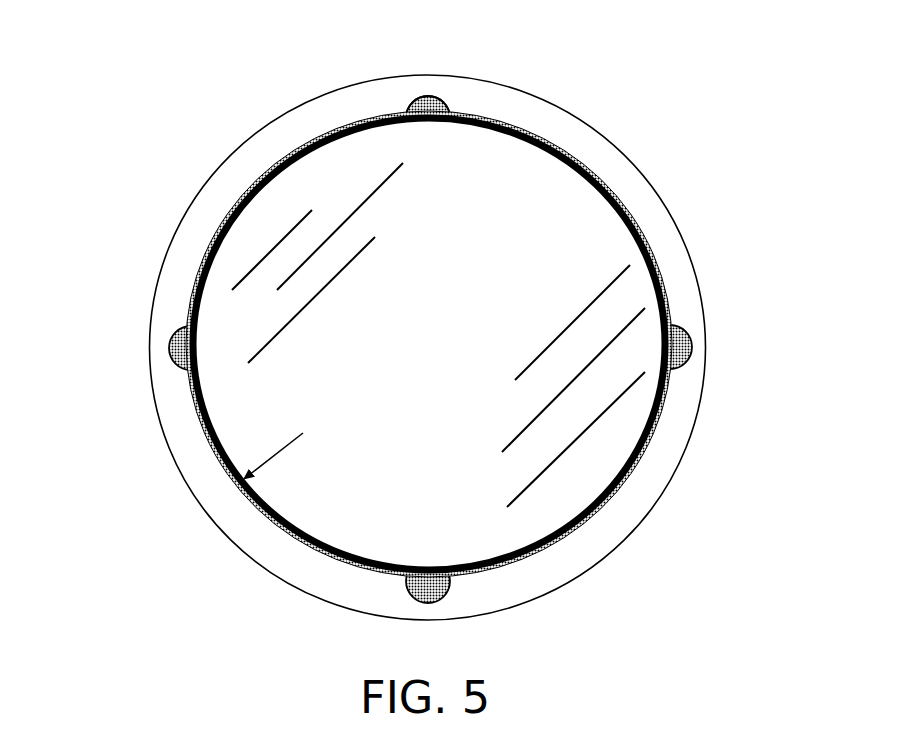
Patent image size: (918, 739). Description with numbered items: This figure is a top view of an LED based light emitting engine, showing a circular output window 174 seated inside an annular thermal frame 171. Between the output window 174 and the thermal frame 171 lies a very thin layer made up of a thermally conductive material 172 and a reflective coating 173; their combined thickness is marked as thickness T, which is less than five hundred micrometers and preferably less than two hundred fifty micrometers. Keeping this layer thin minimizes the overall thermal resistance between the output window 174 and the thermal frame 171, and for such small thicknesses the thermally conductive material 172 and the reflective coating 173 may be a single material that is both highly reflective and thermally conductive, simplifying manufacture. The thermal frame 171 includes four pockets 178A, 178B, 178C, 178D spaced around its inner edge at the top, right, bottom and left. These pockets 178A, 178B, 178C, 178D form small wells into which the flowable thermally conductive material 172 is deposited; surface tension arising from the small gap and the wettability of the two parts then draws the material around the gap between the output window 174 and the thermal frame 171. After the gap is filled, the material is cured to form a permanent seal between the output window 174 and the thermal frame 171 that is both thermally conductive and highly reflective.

The thermal frame 171 is at (250, 138).
The thermally conductive material 172 is at (418, 112).
The reflective coating 173 is at (199, 268).
The output window 174 is at (454, 356).
The pocket 178A is at (441, 94).
The pocket 178B is at (684, 330).
The pocket 178C is at (417, 603).
The pocket 178D is at (170, 350).
The thickness T is at (226, 491).